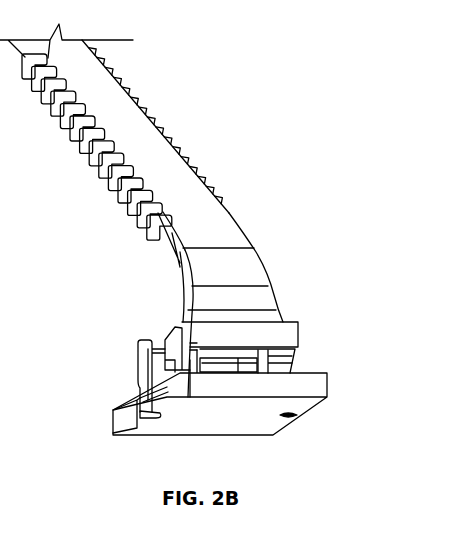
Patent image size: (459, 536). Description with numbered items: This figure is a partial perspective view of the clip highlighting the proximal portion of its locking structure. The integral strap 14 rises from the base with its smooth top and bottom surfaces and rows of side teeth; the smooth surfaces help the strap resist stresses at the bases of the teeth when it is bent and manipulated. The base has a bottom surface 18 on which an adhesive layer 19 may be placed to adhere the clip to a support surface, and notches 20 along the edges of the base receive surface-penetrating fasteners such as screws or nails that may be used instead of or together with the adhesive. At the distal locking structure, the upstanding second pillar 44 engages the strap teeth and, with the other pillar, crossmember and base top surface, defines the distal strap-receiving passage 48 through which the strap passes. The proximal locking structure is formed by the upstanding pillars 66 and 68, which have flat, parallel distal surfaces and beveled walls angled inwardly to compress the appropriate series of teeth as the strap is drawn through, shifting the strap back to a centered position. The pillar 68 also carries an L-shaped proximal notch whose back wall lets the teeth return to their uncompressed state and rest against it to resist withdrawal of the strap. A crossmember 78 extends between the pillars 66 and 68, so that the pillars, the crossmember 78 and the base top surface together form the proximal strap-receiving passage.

The strap 14 is at (215, 230).
The bottom surface 18 is at (172, 420).
The adhesive layer 19 is at (265, 415).
The notches 20 is at (133, 383).
The second pillar 44 is at (138, 357).
The distal strap-receiving passage 48 is at (218, 372).
The pillar 66 is at (287, 368).
The pillar 68 is at (192, 358).
The crossmember 78 is at (166, 337).